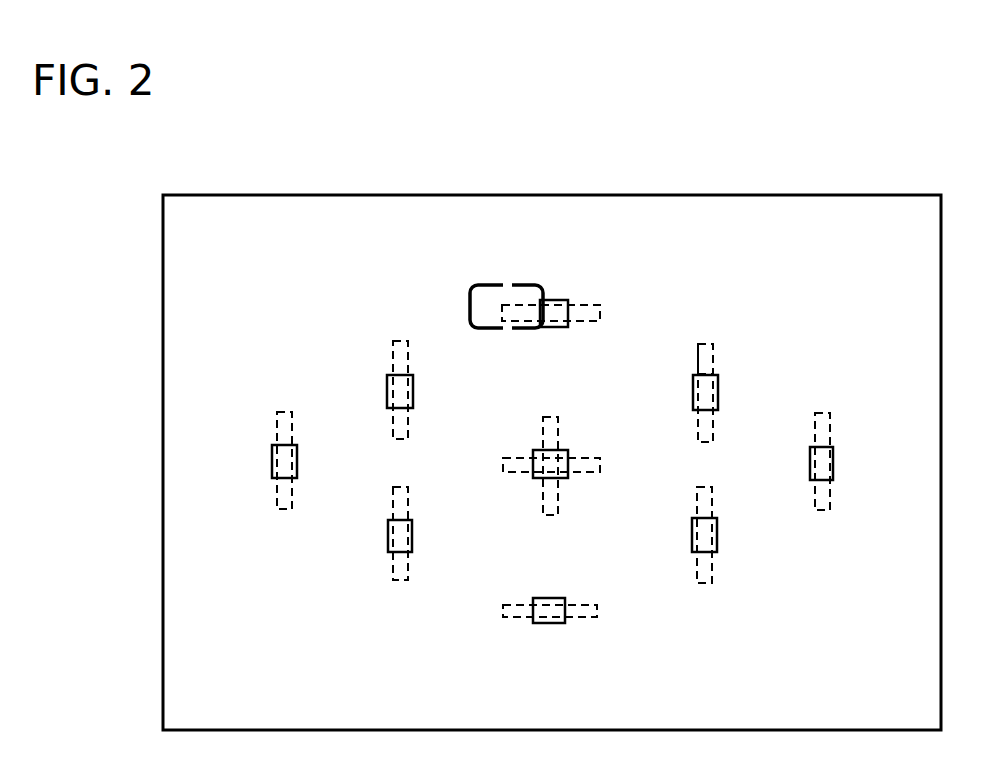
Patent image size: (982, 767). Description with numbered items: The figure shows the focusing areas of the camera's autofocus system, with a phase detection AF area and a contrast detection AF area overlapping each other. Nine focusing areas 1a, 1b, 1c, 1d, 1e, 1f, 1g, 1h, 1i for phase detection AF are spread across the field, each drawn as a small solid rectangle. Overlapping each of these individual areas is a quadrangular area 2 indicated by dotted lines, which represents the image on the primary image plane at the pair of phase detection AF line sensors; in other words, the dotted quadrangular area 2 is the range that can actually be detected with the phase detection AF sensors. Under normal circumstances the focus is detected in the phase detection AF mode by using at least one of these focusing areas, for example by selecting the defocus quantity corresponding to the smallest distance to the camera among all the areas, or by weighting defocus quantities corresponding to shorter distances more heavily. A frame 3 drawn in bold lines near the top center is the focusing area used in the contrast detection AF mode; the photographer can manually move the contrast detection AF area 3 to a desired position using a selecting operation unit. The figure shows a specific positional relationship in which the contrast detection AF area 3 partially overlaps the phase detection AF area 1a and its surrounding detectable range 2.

The focusing area for phase detection AF 1a is at (565, 302).
The focusing area for phase detection AF 1b is at (387, 395).
The focusing area for phase detection AF 1c is at (718, 395).
The focusing area for phase detection AF 1d is at (272, 460).
The focusing area for phase detection AF 1e is at (568, 450).
The focusing area for phase detection AF 1f is at (833, 462).
The focusing area for phase detection AF 1g is at (388, 530).
The focusing area for phase detection AF 1h is at (555, 598).
The focusing area for phase detection AF 1i is at (717, 533).
The quadrangular area 2 is at (709, 352).
The contrast detection AF area 3 is at (523, 285).